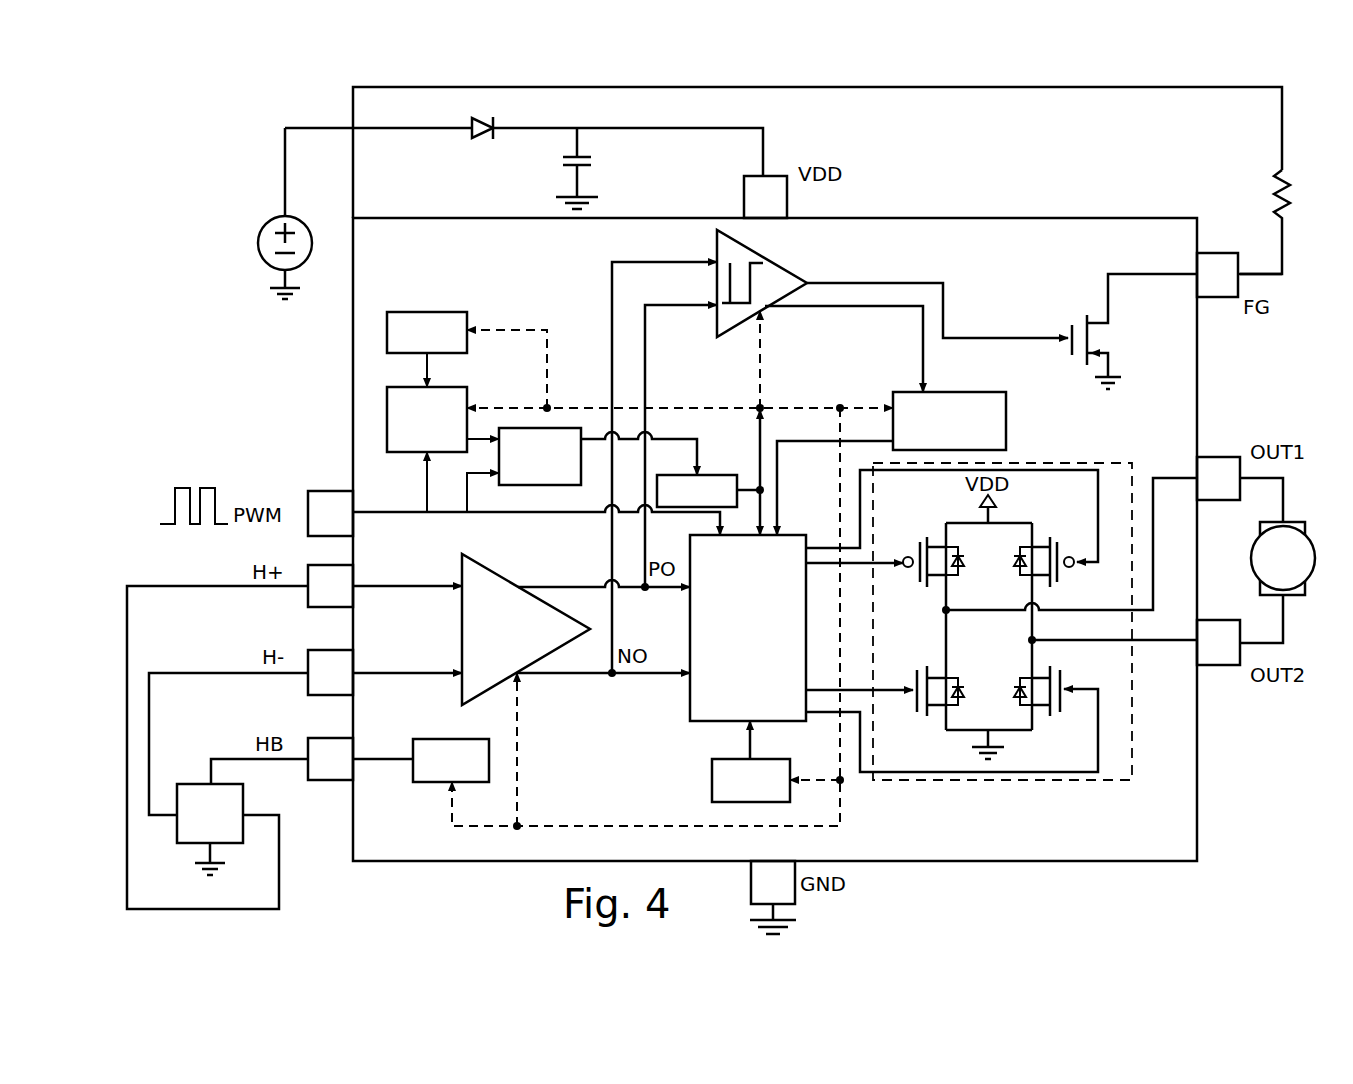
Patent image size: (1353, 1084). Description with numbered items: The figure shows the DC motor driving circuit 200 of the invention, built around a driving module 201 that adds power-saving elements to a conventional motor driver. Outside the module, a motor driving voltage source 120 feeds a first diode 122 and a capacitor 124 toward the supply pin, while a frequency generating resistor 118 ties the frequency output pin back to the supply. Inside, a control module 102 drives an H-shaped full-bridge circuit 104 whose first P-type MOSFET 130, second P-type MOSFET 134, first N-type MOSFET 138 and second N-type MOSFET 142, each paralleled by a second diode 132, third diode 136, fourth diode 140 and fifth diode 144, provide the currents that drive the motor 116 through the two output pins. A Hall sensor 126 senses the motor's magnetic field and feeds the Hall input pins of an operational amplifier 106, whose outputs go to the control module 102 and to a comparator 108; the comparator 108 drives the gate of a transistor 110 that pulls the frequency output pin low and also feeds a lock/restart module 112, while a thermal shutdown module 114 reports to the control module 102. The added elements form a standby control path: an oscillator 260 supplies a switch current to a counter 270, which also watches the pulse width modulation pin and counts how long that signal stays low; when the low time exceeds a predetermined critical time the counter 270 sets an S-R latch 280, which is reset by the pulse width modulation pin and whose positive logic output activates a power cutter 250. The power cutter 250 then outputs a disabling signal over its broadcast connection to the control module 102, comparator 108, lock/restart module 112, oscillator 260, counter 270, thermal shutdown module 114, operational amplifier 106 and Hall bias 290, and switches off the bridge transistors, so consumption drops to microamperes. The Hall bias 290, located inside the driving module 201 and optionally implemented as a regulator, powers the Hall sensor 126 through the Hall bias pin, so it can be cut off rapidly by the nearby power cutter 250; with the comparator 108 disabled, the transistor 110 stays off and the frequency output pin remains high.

The DC motor driving circuit 200 is at (212, 138).
The driving module 201 is at (1130, 218).
The motor driving voltage source 120 is at (258, 243).
The first diode 122 is at (482, 140).
The capacitor 124 is at (590, 160).
The frequency generating resistor 118 is at (1293, 187).
The transistor 110 is at (1107, 337).
The comparator 108 is at (764, 299).
The lock/restart module 112 is at (885, 420).
The H-shaped full-bridge circuit 104 is at (1097, 463).
The first P-type MOSFET 130 is at (915, 540).
The second diode 132 is at (964, 563).
The second P-type MOSFET 134 is at (1058, 540).
The third diode 136 is at (1012, 566).
The first N-type MOSFET 138 is at (915, 668).
The fourth diode 140 is at (964, 694).
The second N-type MOSFET 142 is at (1064, 673).
The fifth diode 144 is at (1012, 695).
The motor 116 is at (1277, 560).
The control module 102 is at (894, 621).
The operational amplifier 106 is at (521, 629).
The thermal shutdown module 114 is at (751, 761).
The Hall sensor 126 is at (217, 747).
The Hall bias 290 is at (421, 760).
The oscillator 260 is at (427, 349).
The counter 270 is at (443, 449).
The S-R latch 280 is at (570, 427).
The power cutter 250 is at (718, 474).